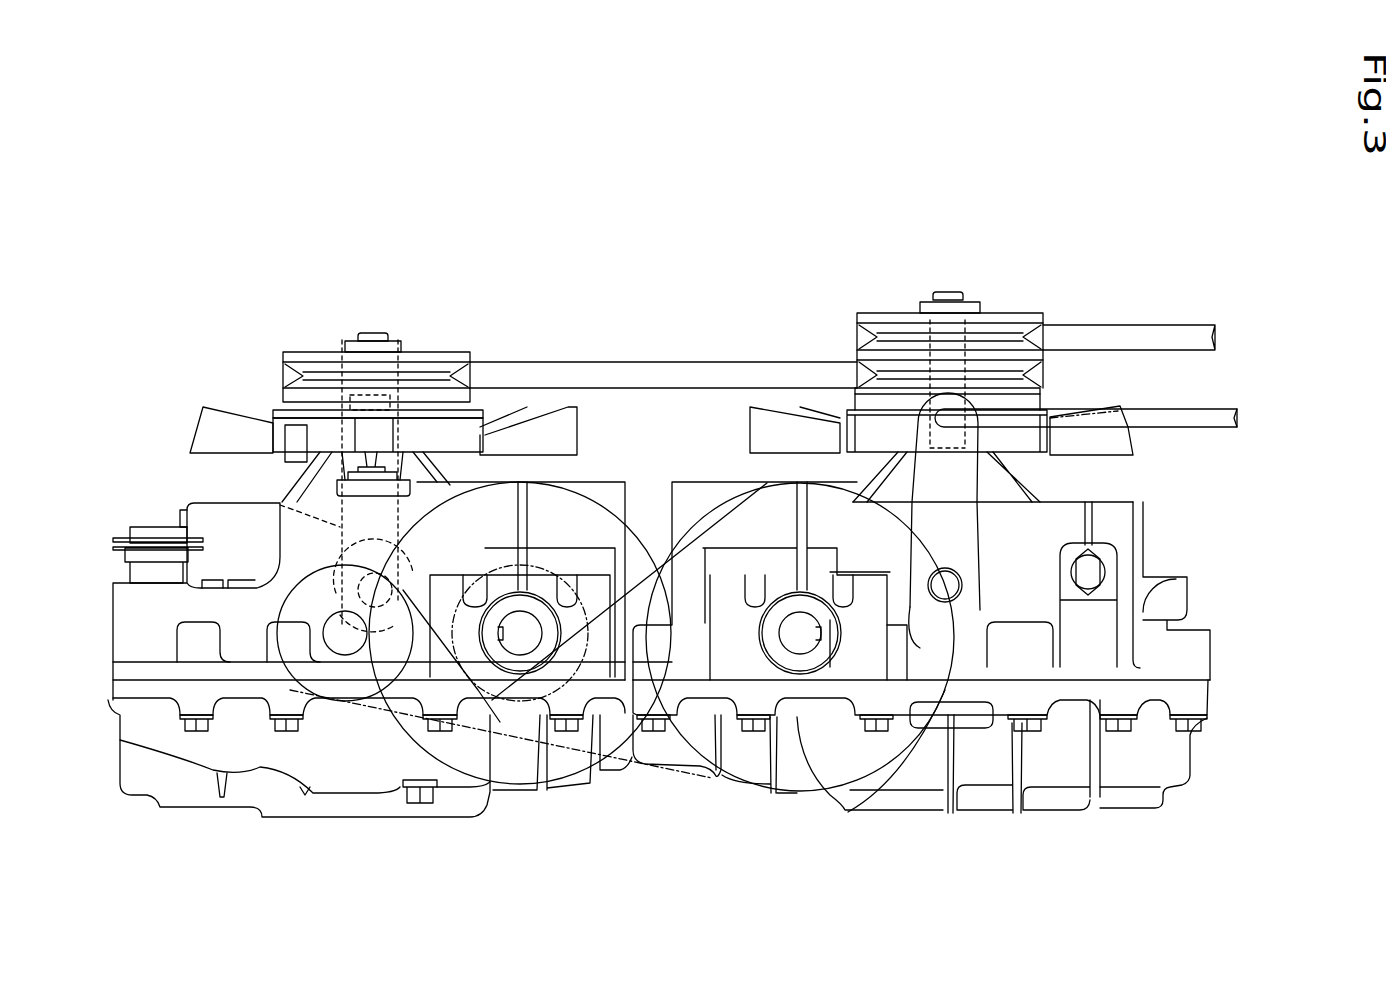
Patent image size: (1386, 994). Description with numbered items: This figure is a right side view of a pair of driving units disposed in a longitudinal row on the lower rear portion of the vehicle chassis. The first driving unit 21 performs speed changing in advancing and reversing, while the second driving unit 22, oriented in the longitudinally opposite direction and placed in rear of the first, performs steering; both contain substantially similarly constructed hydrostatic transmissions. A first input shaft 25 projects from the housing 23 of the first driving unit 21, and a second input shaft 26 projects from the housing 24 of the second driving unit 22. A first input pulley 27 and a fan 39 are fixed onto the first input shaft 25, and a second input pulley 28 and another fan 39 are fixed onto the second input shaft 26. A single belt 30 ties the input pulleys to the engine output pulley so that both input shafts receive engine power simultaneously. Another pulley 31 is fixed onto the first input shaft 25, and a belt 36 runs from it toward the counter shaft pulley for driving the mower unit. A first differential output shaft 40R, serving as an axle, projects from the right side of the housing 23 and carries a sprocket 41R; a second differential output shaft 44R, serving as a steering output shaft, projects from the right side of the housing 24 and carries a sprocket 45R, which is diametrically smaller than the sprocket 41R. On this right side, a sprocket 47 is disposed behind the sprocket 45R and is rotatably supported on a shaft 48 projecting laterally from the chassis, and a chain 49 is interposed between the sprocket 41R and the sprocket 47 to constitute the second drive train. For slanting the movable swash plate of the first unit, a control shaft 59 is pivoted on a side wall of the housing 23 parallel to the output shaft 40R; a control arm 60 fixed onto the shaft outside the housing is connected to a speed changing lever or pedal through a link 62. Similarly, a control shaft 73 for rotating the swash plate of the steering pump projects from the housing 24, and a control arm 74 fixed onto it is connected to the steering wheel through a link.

The first driving unit 21 is at (694, 486).
The second driving unit 22 is at (129, 483).
The housing 23 is at (1132, 538).
The housing 24 is at (112, 610).
The first input shaft 25 is at (945, 292).
The second input shaft 26 is at (373, 333).
The first input pulley 27 is at (1043, 357).
The second input pulley 28 is at (297, 352).
The belt 30 is at (605, 362).
The pulley 31 is at (1000, 313).
The belt 36 is at (1113, 325).
The fan 39 is at (210, 405).
The first differential output shaft 40R is at (800, 645).
The sprocket 41R is at (853, 815).
The second differential output shaft 44R is at (520, 645).
The sprocket 45R is at (588, 700).
The sprocket 47 is at (398, 690).
The shaft 48 is at (358, 656).
The chain 49 is at (645, 760).
The control shaft 59 is at (957, 587).
The control arm 60 is at (985, 525).
The link 62 is at (1175, 418).
The control shaft 73 is at (387, 557).
The control arm 74 is at (277, 497).